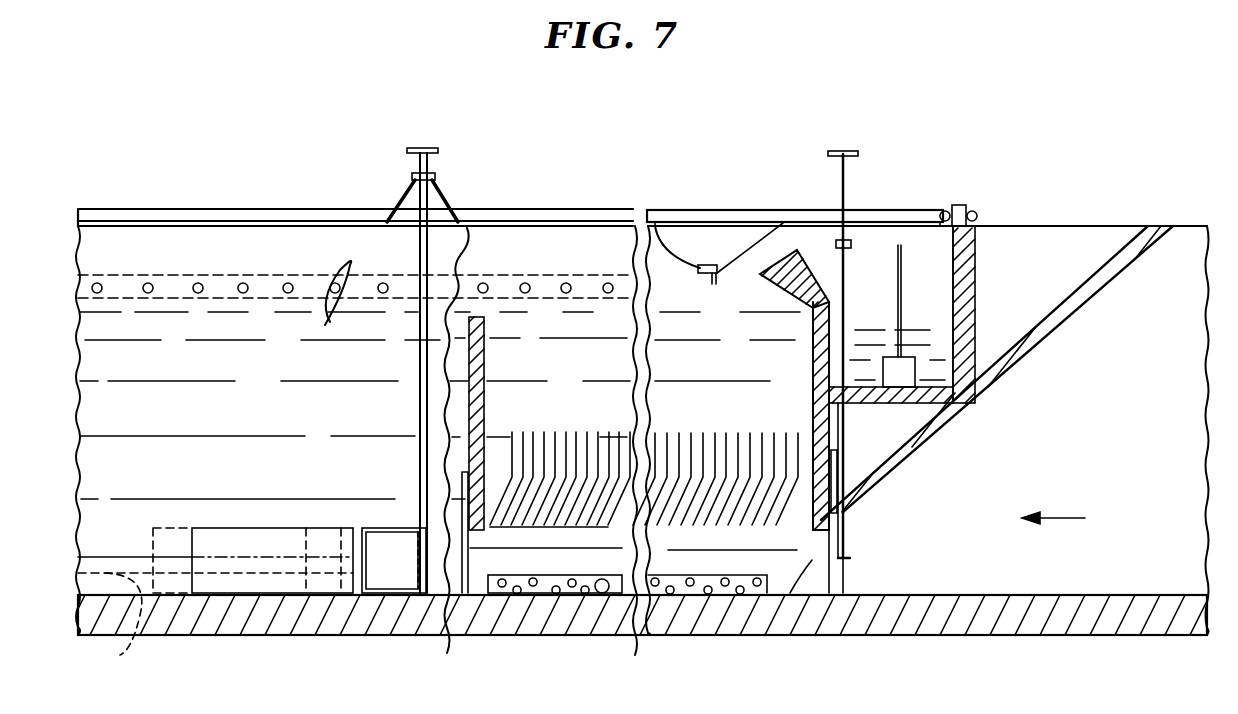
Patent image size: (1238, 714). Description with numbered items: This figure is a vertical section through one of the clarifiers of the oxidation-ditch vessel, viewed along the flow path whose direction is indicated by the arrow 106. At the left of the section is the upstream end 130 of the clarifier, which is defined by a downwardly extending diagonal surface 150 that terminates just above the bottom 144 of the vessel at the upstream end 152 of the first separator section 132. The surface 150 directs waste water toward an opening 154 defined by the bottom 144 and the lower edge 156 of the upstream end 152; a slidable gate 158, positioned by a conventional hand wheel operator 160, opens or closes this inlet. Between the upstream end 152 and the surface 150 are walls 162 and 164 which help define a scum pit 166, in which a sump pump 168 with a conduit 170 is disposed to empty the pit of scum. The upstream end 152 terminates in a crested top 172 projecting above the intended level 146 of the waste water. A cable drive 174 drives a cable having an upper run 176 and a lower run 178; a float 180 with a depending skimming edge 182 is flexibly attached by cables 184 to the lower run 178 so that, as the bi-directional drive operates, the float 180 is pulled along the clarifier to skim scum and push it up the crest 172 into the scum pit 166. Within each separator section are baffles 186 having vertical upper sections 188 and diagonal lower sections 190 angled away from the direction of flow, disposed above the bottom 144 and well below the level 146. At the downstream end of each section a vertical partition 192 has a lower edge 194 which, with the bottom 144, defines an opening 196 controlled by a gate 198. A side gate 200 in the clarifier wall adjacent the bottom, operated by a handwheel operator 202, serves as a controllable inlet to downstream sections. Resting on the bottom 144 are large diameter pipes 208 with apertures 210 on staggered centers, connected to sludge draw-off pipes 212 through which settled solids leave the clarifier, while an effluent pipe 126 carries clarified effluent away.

The arrow 106 is at (1085, 520).
The effluent pipe 126 is at (190, 285).
The upstream end 130 is at (1070, 225).
The first separator section 132 is at (686, 208).
The bottom 144 is at (980, 570).
The intended level of waste water 146 is at (356, 301).
The diagonal surface 150 is at (1010, 375).
The upstream end of the first separator section 152 is at (812, 362).
The opening 154 is at (800, 600).
The lower edge 156 is at (815, 526).
The slidable gate 158 is at (845, 560).
The hand wheel operator 160 is at (848, 198).
The wall 162 is at (882, 403).
The wall 164 is at (976, 292).
The scum pit 166 is at (892, 337).
The sump pump 168 is at (920, 357).
The conduit 170 is at (901, 262).
The crested top 172 is at (783, 262).
The cable drive 174 is at (960, 205).
The upper run 176 is at (730, 224).
The lower run 178 is at (766, 222).
The float 180 is at (703, 276).
The skimming edge 182 is at (718, 282).
The cables 184 is at (680, 262).
The baffles 186 is at (736, 462).
The vertical upper sections 188 is at (548, 462).
The diagonal lower sections 190 is at (548, 514).
The vertical partition 192 is at (485, 345).
The lower edge 194 is at (463, 535).
The opening 196 is at (465, 595).
The gate 198 is at (434, 452).
The side gate 200 is at (350, 604).
The handwheel operator 202 is at (435, 200).
The pipe 208 is at (540, 575).
The apertures 210 is at (700, 596).
The sludge draw-off pipes 212 is at (652, 450).